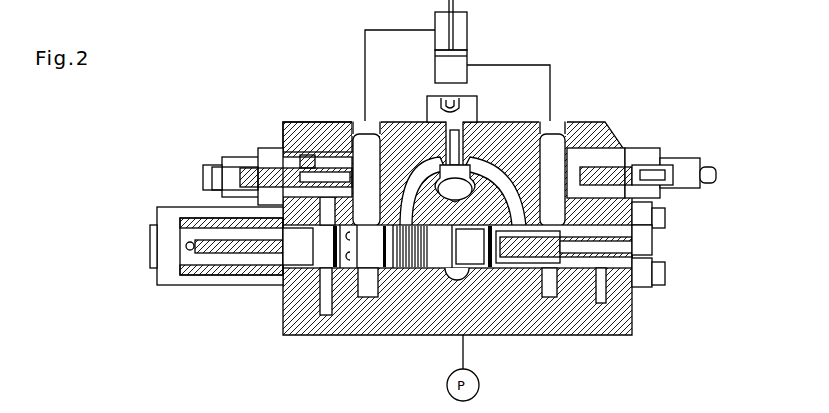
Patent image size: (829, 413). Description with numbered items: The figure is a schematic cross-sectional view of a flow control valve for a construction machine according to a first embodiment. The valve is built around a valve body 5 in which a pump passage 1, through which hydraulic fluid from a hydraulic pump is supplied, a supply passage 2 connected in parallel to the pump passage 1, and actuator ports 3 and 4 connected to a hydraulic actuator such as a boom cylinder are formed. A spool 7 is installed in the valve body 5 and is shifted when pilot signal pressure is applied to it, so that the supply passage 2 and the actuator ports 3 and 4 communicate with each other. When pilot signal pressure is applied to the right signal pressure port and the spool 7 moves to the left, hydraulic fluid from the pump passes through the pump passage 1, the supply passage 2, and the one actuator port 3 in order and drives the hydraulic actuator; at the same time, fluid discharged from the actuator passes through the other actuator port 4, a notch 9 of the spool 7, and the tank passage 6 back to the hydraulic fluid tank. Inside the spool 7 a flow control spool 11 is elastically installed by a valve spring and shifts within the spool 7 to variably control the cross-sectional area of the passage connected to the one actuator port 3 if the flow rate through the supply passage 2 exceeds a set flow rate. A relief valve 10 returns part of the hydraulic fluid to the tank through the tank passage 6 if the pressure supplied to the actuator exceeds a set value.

The pump passage 1 is at (482, 124).
The supply passage 2 is at (513, 125).
The actuator port 3 is at (556, 121).
The actuator port 4 is at (362, 121).
The valve body 5 is at (285, 121).
The tank passage 6 is at (330, 336).
The spool 7 is at (283, 290).
The notch 9 is at (368, 336).
The relief valve 10 is at (218, 150).
The flow control spool 11 is at (516, 258).